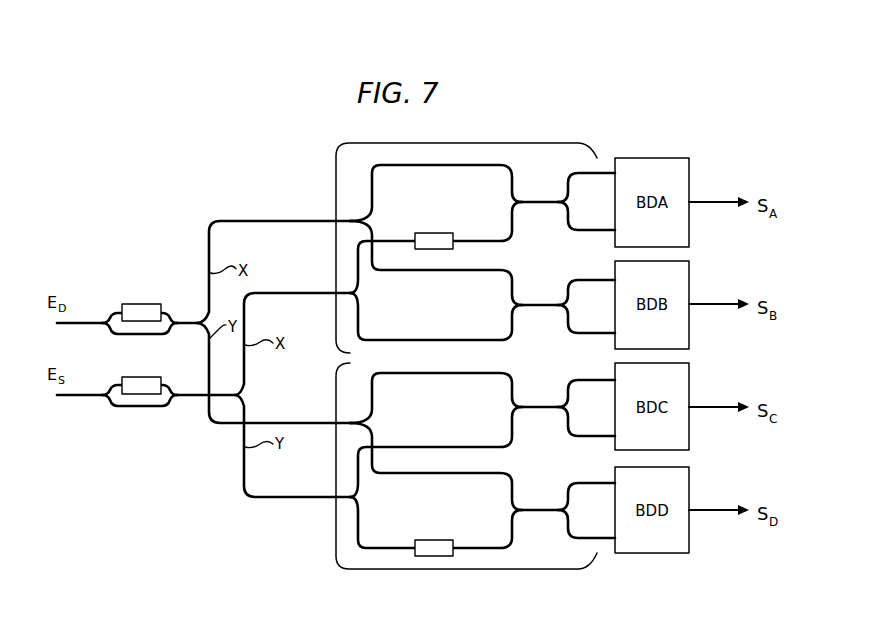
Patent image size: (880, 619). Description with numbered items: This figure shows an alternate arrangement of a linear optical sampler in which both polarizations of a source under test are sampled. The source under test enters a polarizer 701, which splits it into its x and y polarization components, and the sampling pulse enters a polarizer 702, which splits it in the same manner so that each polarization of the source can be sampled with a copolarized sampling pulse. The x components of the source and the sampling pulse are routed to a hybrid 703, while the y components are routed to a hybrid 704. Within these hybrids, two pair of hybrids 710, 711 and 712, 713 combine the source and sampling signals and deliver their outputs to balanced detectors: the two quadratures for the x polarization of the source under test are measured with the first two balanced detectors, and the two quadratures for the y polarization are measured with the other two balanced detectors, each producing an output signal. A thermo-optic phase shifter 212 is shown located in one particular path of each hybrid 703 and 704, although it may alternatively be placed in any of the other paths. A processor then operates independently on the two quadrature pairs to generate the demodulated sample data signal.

The polarizer 701 is at (143, 304).
The polarizer 702 is at (143, 377).
The hybrid 703 is at (446, 248).
The hybrid 704 is at (446, 466).
The hybrid 710 is at (568, 201).
The hybrid 711 is at (568, 306).
The hybrid 712 is at (568, 408).
The hybrid 713 is at (568, 510).
The thermo-optic phase shifter 212 is at (437, 233).